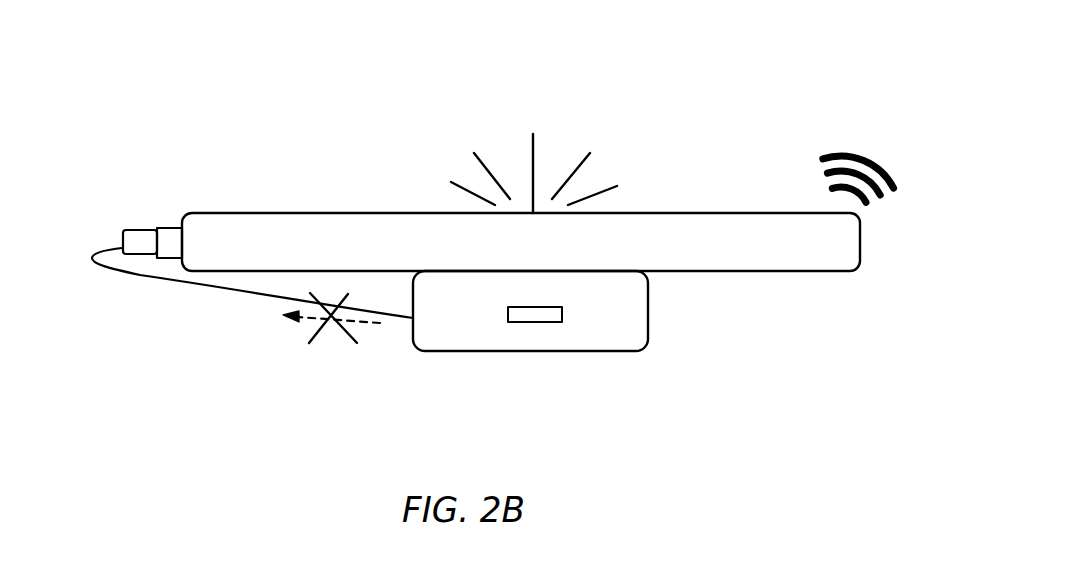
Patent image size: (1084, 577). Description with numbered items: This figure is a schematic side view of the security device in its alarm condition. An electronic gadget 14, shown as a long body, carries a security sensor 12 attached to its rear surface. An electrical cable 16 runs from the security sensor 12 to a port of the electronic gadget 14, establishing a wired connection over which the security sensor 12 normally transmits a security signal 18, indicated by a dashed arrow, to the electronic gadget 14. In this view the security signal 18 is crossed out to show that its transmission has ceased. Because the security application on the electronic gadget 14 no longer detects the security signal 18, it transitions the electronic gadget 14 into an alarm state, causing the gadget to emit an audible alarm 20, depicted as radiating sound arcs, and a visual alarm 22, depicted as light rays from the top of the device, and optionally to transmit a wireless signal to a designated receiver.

The security sensor 12 is at (648, 318).
The electronic gadget 14 is at (810, 271).
The electrical cable 16 is at (170, 283).
The security signal 18 is at (313, 318).
The audible alarm 20 is at (878, 152).
The visual alarm 22 is at (533, 147).